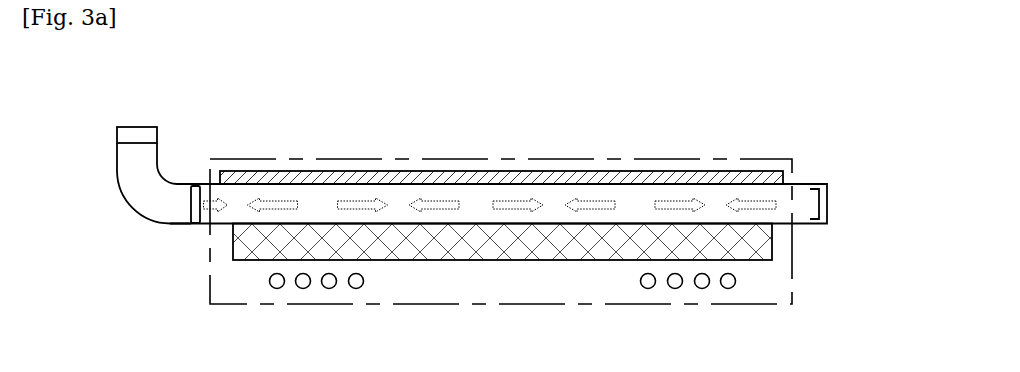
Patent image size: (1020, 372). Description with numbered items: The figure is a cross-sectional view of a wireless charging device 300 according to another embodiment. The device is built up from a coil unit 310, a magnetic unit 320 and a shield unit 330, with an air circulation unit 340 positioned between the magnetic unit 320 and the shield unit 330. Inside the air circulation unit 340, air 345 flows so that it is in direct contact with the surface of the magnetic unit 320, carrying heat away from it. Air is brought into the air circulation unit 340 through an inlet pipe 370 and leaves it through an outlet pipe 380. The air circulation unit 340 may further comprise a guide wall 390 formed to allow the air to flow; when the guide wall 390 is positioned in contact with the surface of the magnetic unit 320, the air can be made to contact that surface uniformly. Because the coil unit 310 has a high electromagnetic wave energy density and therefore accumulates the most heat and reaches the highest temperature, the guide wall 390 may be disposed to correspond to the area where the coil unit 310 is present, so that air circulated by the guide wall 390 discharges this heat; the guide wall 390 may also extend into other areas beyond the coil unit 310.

The wireless charging device 300 is at (530, 109).
The coil unit 310 is at (726, 290).
The magnetic unit 320 is at (765, 245).
The shield unit 330 is at (636, 175).
The air circulation unit 340 is at (797, 208).
The air 345 is at (591, 203).
The inlet pipe 370 is at (126, 170).
The outlet pipe 380 is at (126, 135).
The guide wall 390 is at (820, 203).